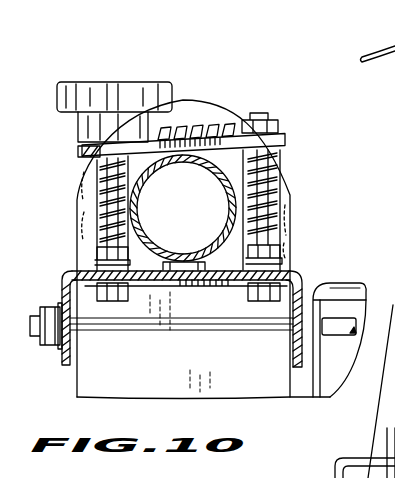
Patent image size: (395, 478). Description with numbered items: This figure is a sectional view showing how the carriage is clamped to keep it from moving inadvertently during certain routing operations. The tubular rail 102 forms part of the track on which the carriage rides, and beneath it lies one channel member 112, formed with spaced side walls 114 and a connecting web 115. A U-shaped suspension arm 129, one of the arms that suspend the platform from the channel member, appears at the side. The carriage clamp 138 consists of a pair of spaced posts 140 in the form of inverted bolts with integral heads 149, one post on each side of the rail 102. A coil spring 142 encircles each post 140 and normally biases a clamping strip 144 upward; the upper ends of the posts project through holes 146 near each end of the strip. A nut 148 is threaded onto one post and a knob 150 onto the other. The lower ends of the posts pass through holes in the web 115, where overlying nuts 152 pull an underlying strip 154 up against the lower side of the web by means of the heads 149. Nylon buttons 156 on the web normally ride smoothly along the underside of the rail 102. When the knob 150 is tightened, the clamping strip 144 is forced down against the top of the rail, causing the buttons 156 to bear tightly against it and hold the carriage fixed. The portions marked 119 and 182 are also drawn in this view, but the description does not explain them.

The tubular rail 102 is at (140, 217).
The channel member 112 is at (52, 295).
The side wall 114 is at (58, 358).
The connecting web 115 is at (299, 277).
The housing 119 is at (297, 372).
The U-shaped suspension arm 129 is at (374, 283).
The carriage clamp 138 is at (198, 88).
The post 140 is at (88, 184).
The coil spring 142 is at (97, 226).
The clamping strip 144 is at (232, 132).
The hole 146 is at (82, 152).
The nut 148 is at (273, 128).
The head 149 is at (117, 304).
The knob 150 is at (78, 82).
The overlying nut 152 is at (97, 255).
The underlying strip 154 is at (178, 286).
The nylon button 156 is at (192, 260).
The rod 182 is at (347, 454).